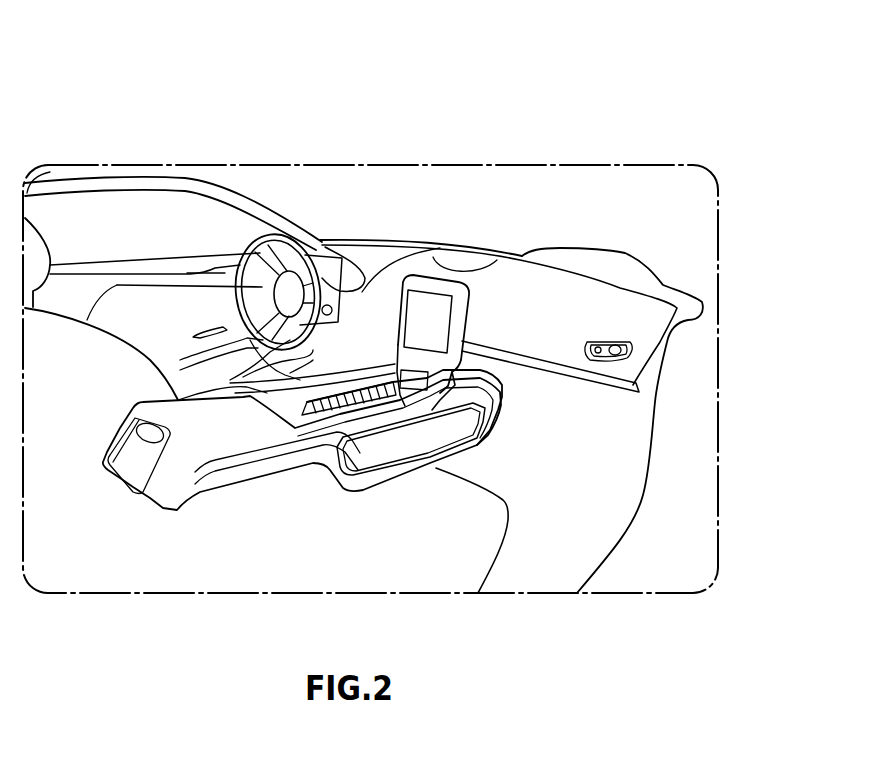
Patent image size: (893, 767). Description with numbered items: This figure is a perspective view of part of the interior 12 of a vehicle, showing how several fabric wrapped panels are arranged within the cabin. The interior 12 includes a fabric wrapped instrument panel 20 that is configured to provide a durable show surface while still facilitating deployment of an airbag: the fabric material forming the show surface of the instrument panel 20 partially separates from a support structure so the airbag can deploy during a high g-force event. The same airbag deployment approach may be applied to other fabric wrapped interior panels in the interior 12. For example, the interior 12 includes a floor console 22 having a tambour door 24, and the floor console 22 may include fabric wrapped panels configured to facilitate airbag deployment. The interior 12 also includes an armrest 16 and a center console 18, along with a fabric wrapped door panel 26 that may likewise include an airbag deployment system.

The interior 12 is at (672, 237).
The armrest 16 is at (193, 415).
The center console 18 is at (457, 292).
The instrument panel 20 is at (627, 315).
The floor console 22 is at (427, 432).
The tambour door 24 is at (330, 400).
The door panel 26 is at (157, 312).